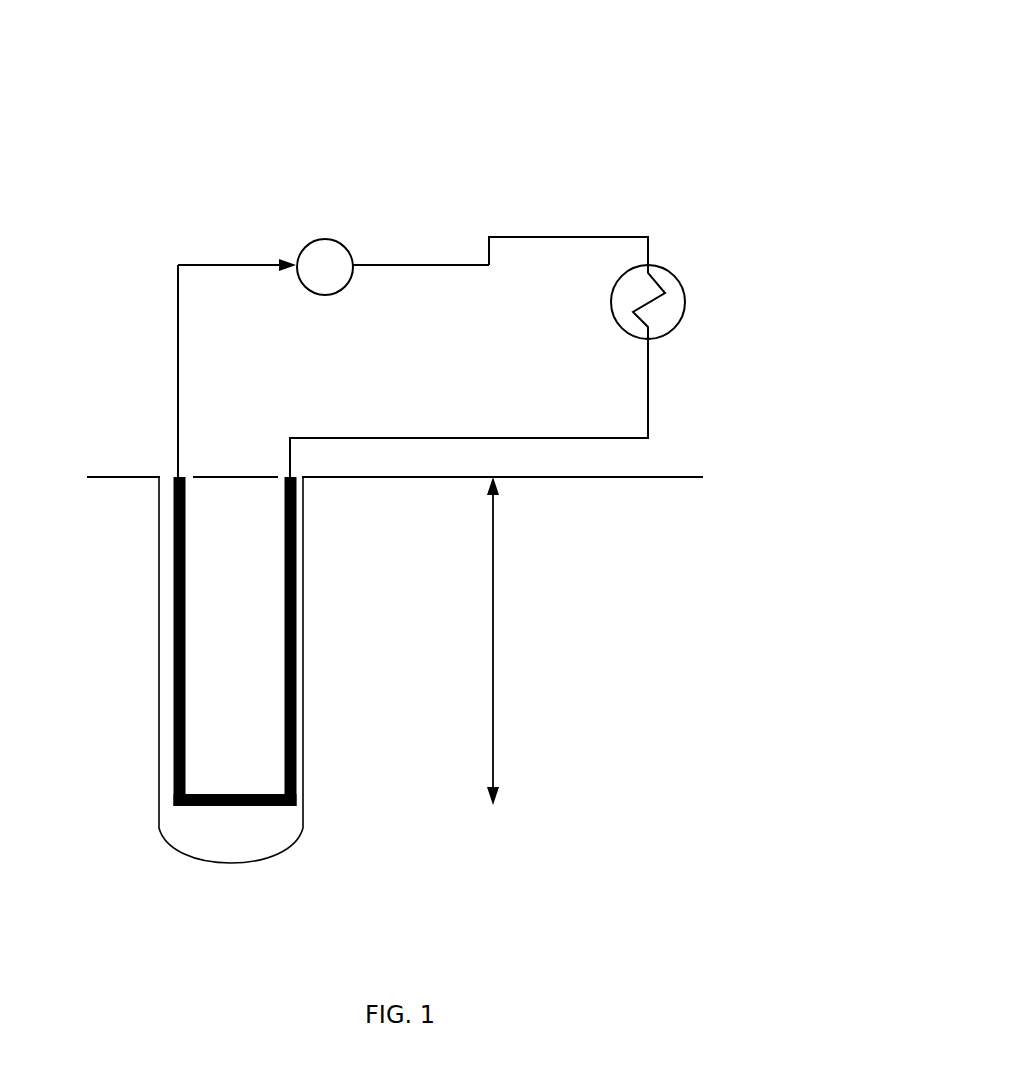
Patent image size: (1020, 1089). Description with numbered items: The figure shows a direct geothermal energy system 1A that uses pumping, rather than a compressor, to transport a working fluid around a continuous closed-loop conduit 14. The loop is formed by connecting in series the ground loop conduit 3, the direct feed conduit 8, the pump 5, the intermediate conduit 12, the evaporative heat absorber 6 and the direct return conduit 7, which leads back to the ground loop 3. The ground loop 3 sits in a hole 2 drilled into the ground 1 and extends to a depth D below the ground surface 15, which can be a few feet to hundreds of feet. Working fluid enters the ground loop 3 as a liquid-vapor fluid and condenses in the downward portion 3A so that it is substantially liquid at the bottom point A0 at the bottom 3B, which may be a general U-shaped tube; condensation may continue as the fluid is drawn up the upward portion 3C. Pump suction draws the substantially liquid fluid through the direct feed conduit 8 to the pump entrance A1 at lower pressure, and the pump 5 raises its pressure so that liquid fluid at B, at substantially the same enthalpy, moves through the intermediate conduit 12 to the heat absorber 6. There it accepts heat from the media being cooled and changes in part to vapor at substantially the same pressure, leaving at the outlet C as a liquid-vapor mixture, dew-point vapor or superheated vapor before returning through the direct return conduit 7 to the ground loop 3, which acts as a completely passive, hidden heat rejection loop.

The direct geothermal energy system 1A is at (606, 124).
The continuous closed-loop conduit 14 is at (204, 236).
The direct feed conduit 8 is at (177, 328).
The pump entrance A1 is at (290, 264).
The pump 5 is at (328, 255).
The pump outlet point B is at (367, 265).
The intermediate conduit 12 is at (520, 237).
The evaporative heat absorber 6 is at (683, 286).
The evaporator outlet C is at (650, 368).
The direct return conduit 7 is at (460, 438).
The ground 1 is at (120, 477).
The ground surface 15 is at (338, 478).
The depth D is at (504, 641).
The hole 2 is at (159, 585).
The ground loop conduit 3 is at (237, 697).
The upward portion 3C is at (175, 670).
The bottom 3B is at (203, 807).
The downward portion 3A is at (296, 765).
The bottom point of ground loop A0 is at (252, 807).